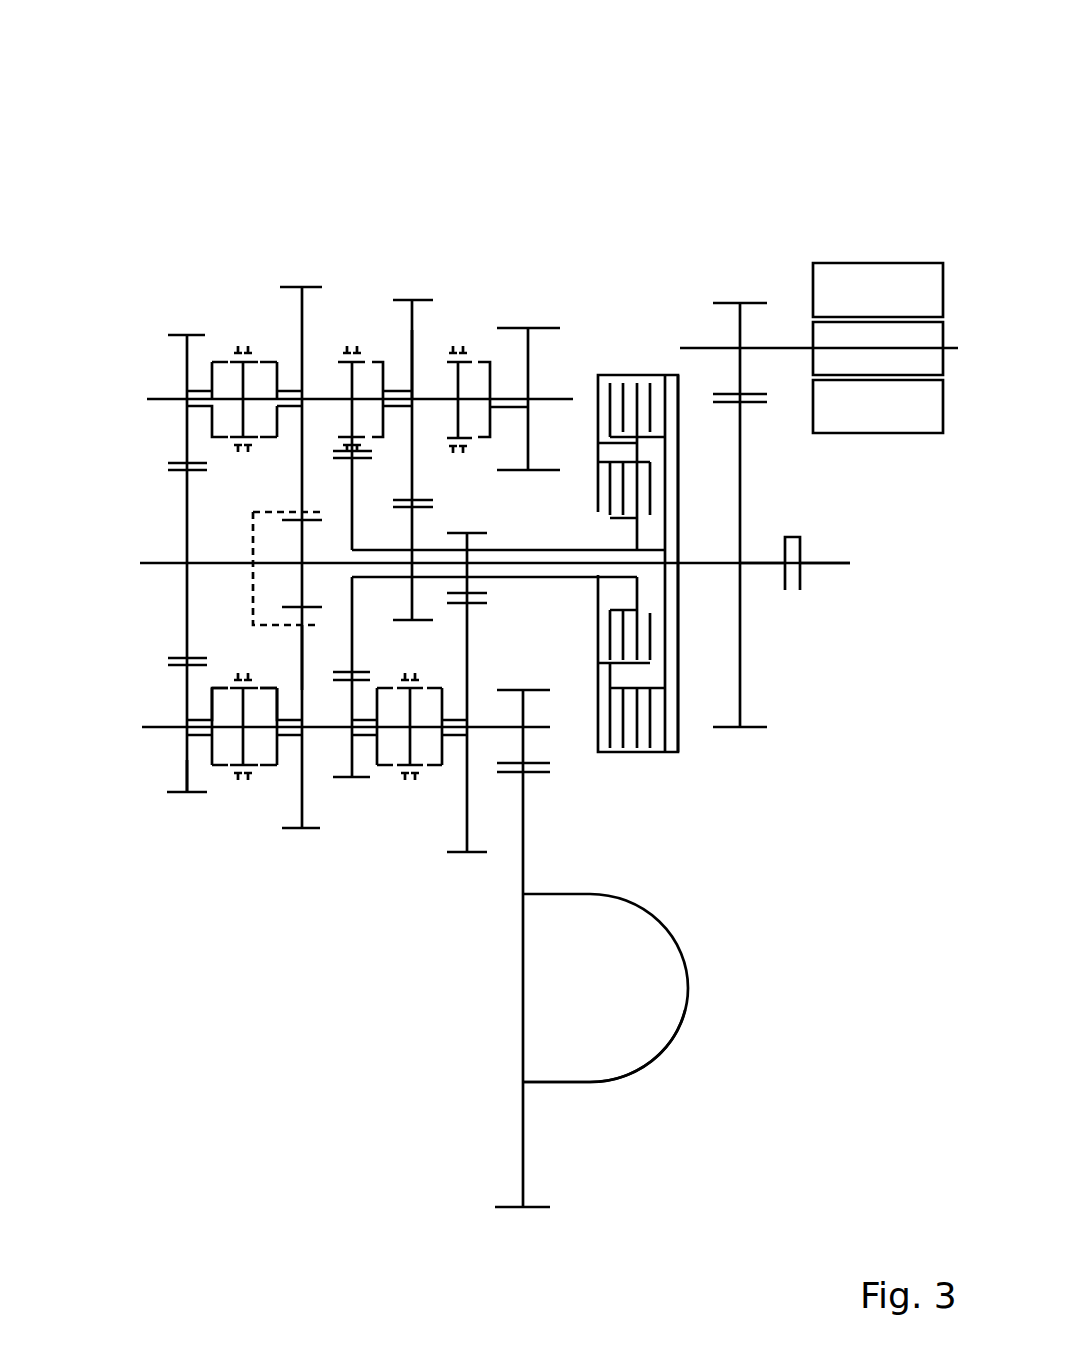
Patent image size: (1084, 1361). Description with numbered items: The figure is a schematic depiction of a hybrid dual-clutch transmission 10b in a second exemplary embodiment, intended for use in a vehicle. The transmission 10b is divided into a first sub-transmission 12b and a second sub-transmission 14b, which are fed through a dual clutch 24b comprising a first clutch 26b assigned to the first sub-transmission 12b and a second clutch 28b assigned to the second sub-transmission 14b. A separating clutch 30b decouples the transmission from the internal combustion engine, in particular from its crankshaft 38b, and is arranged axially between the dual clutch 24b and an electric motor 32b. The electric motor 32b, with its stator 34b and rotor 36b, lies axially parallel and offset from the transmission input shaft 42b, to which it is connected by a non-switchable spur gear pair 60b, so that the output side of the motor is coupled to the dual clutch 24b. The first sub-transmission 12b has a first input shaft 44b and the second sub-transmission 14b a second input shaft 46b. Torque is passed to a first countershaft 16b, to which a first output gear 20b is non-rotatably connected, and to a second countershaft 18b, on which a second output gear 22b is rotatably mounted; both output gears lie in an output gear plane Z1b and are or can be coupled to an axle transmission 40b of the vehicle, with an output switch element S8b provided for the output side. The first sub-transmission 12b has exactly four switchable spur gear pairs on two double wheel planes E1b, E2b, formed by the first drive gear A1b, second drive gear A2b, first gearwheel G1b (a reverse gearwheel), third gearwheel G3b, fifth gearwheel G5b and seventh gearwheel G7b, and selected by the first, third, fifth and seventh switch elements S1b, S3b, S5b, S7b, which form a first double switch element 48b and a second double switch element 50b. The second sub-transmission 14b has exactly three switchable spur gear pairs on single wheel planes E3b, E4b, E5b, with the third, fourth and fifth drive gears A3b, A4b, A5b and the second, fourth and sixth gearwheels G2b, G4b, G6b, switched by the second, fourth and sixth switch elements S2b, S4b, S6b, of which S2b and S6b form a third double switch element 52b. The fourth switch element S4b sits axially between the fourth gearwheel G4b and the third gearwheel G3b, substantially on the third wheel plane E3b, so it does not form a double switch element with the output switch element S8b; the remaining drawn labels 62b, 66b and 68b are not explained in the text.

The hybrid dual-clutch transmission 10b is at (733, 126).
The first sub-transmission 12b is at (245, 156).
The second sub-transmission 14b is at (412, 136).
The first countershaft 16b is at (142, 735).
The second countershaft 18b is at (147, 399).
The first output gear 20b is at (523, 735).
The second output gear 22b is at (532, 352).
The dual clutch 24b is at (638, 368).
The first clutch 26b is at (682, 413).
The second clutch 28b is at (654, 480).
The separating clutch 30b is at (793, 591).
The electric motor 32b is at (890, 233).
The stator 34b is at (921, 292).
The rotor 36b is at (838, 338).
The crankshaft 38b is at (850, 563).
The axle transmission 40b is at (697, 988).
The transmission input shaft 42b is at (762, 568).
The first input shaft 44b is at (140, 563).
The second input shaft 46b is at (567, 550).
The first double switch element 48b is at (243, 785).
The second double switch element 50b is at (243, 349).
The third double switch element 52b is at (384, 772).
The non-switchable spur gear pair 60b is at (740, 283).
The shifting element 62b is at (464, 448).
The clutch half 66b is at (523, 818).
The clutch half 68b is at (632, 1072).
The first drive gear A1b is at (187, 480).
The second drive gear A2b is at (302, 590).
The third drive gear A3b is at (393, 502).
The fourth drive gear A4b is at (253, 512).
The fifth drive gear A5b is at (470, 585).
The first wheel plane E1b is at (218, 773).
The second wheel plane E2b is at (302, 839).
The third wheel plane E3b is at (352, 784).
The fourth wheel plane E4b is at (412, 289).
The fifth wheel plane E5b is at (465, 873).
The first gearwheel G1b is at (302, 643).
The second gearwheel G2b is at (470, 790).
The third gearwheel G3b is at (302, 355).
The fourth gearwheel G4b is at (410, 333).
The fifth gearwheel G5b is at (187, 692).
The sixth gearwheel G6b is at (356, 742).
The seventh gearwheel G7b is at (187, 430).
The first switch element S1b is at (268, 773).
The second switch element S2b is at (437, 772).
The third switch element S3b is at (268, 359).
The fourth switch element S4b is at (352, 343).
The fifth switch element S5b is at (187, 799).
The sixth switch element S6b is at (408, 785).
The seventh switch element S7b is at (218, 359).
The output switch element S8b is at (458, 341).
The output gear plane Z1b is at (528, 322).